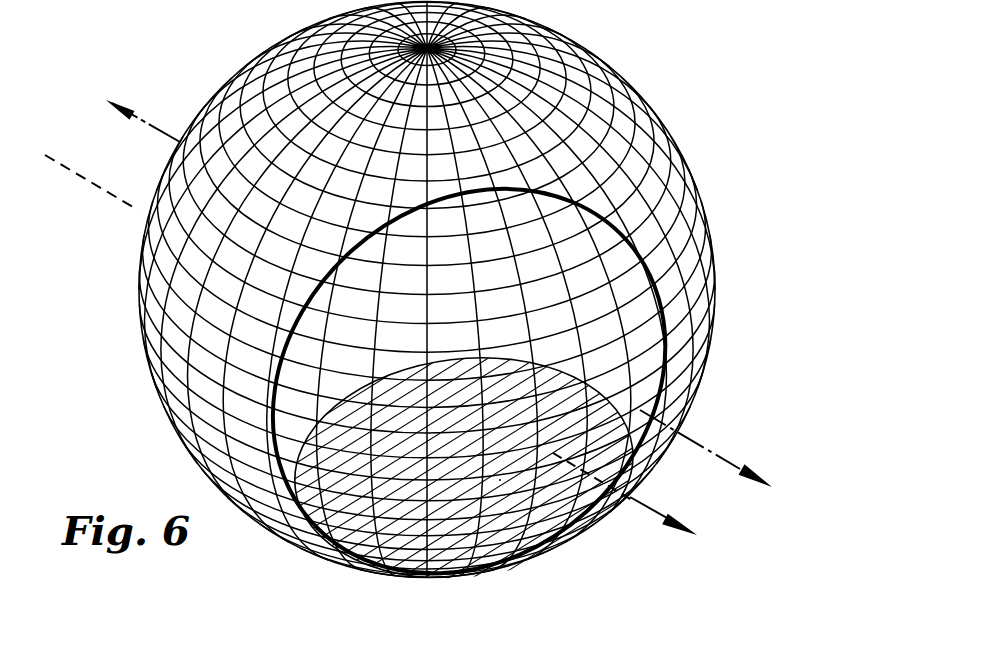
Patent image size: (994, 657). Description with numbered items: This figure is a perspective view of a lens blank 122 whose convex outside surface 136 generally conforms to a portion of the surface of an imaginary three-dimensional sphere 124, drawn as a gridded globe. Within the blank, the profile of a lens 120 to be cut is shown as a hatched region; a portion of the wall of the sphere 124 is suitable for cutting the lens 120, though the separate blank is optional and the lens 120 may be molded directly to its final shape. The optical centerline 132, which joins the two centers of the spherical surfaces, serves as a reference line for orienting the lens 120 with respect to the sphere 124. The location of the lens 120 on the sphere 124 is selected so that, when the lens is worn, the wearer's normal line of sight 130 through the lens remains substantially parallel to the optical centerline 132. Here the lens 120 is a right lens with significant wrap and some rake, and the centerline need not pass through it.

The lens 120 is at (453, 540).
The lens blank 122 is at (636, 297).
The sphere 124 is at (637, 137).
The line of sight 130 is at (88, 182).
The optical centerline 132 is at (145, 120).
The convex outside surface 136 is at (500, 480).